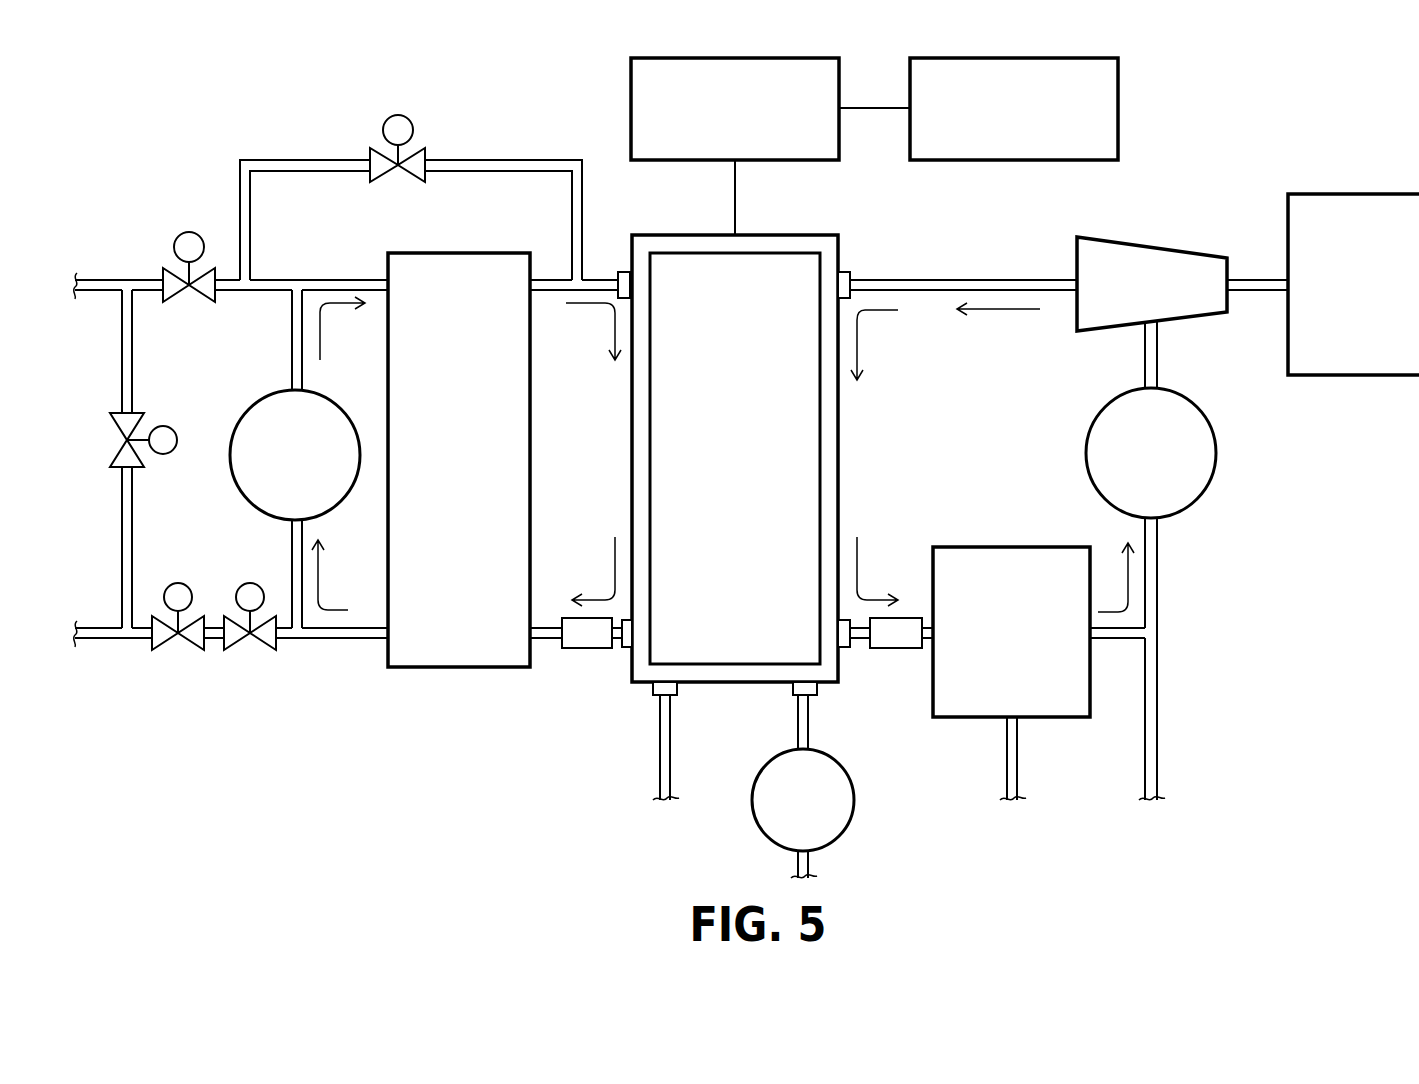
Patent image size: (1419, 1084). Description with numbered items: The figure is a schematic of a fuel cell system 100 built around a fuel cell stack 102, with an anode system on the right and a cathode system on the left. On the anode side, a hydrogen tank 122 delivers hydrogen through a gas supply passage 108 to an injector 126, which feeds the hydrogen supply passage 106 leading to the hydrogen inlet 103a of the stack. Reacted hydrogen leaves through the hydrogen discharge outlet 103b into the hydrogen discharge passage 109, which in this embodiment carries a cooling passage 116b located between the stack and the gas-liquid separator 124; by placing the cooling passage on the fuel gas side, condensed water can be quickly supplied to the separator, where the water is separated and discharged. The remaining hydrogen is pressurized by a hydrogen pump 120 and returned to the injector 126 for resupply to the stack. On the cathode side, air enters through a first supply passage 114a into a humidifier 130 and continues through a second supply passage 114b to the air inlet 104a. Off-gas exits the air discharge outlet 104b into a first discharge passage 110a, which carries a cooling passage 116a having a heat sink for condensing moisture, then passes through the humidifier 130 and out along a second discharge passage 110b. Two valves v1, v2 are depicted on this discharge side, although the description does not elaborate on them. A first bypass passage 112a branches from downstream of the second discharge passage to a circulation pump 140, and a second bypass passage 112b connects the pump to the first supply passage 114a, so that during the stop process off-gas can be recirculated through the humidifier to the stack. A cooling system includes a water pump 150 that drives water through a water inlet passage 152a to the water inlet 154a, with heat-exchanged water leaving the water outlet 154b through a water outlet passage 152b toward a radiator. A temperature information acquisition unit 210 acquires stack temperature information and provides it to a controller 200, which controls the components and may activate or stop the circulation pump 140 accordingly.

The fuel cell system 100 is at (188, 202).
The fuel cell stack 102 is at (768, 458).
The hydrogen inlet 103a is at (874, 261).
The hydrogen discharge outlet 103b is at (841, 671).
The air inlet 104a is at (614, 248).
The air discharge outlet 104b is at (623, 679).
The hydrogen supply passage 106 is at (963, 257).
The gas supply passage 108 is at (1257, 257).
The hydrogen discharge passage 109 is at (870, 661).
The first discharge passage 110a is at (538, 669).
The second discharge passage 110b is at (332, 664).
The first bypass passage 112a is at (258, 574).
The second bypass passage 112b is at (258, 340).
The first supply passage 114a is at (345, 257).
The second supply passage 114b is at (567, 255).
The cooling passage 116a is at (592, 664).
The cooling passage 116b is at (901, 670).
The hydrogen pump 120 is at (1183, 453).
The hydrogen tank 122 is at (1353, 259).
The gas-liquid separator 124 is at (1039, 645).
The injector 126 is at (1152, 262).
The humidifier 130 is at (459, 432).
The circulation pump 140 is at (278, 440).
The water pump 150 is at (837, 813).
The water inlet passage 152a is at (760, 722).
The water outlet passage 152b is at (629, 747).
The water inlet 154a is at (765, 701).
The water outlet 154b is at (692, 735).
The controller 200 is at (1047, 109).
The temperature information acquisition unit 210 is at (736, 146).
The valve v1 is at (250, 640).
The valve v2 is at (179, 640).